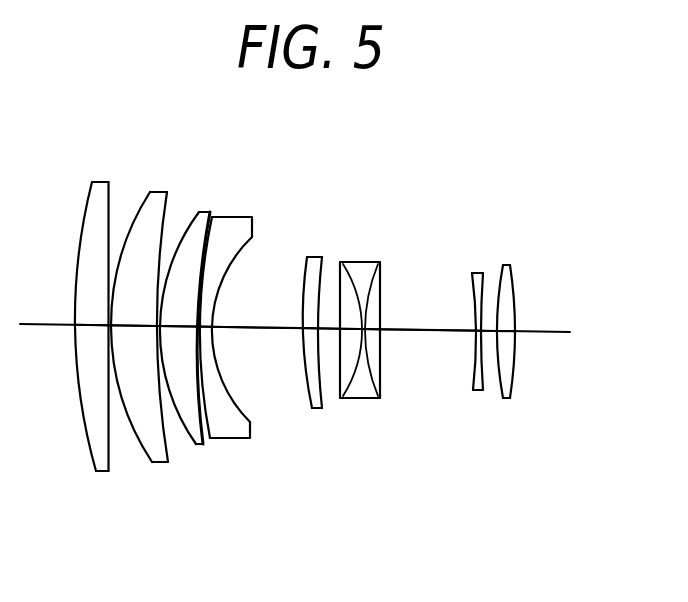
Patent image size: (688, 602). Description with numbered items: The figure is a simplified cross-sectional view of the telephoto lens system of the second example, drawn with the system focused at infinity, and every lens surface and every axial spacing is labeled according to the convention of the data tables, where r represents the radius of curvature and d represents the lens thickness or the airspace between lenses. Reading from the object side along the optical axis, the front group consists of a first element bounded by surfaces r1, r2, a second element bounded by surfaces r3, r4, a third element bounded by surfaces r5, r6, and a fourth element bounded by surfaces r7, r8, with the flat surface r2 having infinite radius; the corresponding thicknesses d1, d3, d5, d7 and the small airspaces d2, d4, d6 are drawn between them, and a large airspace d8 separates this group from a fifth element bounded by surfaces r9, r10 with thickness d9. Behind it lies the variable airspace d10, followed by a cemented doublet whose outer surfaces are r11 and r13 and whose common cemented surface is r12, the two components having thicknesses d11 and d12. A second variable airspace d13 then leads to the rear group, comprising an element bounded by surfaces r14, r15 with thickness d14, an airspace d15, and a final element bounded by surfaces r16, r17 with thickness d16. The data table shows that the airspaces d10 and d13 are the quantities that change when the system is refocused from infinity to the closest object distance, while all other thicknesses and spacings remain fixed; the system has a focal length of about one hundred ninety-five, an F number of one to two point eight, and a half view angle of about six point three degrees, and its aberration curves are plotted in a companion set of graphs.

The radius of curvature of surface 1 r1 is at (93, 200).
The radius of curvature of surface 2 r2 is at (110, 202).
The radius of curvature of surface 3 r3 is at (138, 215).
The radius of curvature of surface 4 r4 is at (164, 215).
The radius of curvature of surface 5 r5 is at (188, 215).
The radius of curvature of surface 6 r6 is at (207, 215).
The radius of curvature of surface 7 r7 is at (223, 218).
The radius of curvature of surface 8 r8 is at (254, 222).
The radius of curvature of surface 9 r9 is at (307, 270).
The radius of curvature of surface 10 r10 is at (326, 272).
The radius of curvature of surface 11 r11 is at (336, 272).
The radius of curvature of surface 12 r12 is at (358, 272).
The radius of curvature of surface 13 r13 is at (390, 272).
The radius of curvature of surface 14 r14 is at (463, 272).
The radius of curvature of surface 15 r15 is at (488, 272).
The radius of curvature of surface 16 r16 is at (500, 272).
The radius of curvature of surface 17 r17 is at (514, 278).
The lens thickness at surface 1 d1 is at (90, 328).
The airspace at surface 2 d2 is at (118, 328).
The lens thickness at surface 3 d3 is at (134, 328).
The airspace at surface 4 d4 is at (158, 328).
The lens thickness at surface 5 d5 is at (178, 328).
The airspace at surface 6 d6 is at (199, 329).
The lens thickness at surface 7 d7 is at (206, 330).
The airspace at surface 8 d8 is at (260, 329).
The lens thickness at surface 9 d9 is at (310, 330).
The variable airspace at surface 10 d10 is at (330, 330).
The lens thickness at surface 11 d11 is at (351, 330).
The lens thickness at surface 12 d12 is at (366, 330).
The variable airspace at surface 13 d13 is at (418, 331).
The lens thickness at surface 14 d14 is at (476, 331).
The airspace at surface 15 d15 is at (490, 331).
The lens thickness at surface 16 d16 is at (507, 332).